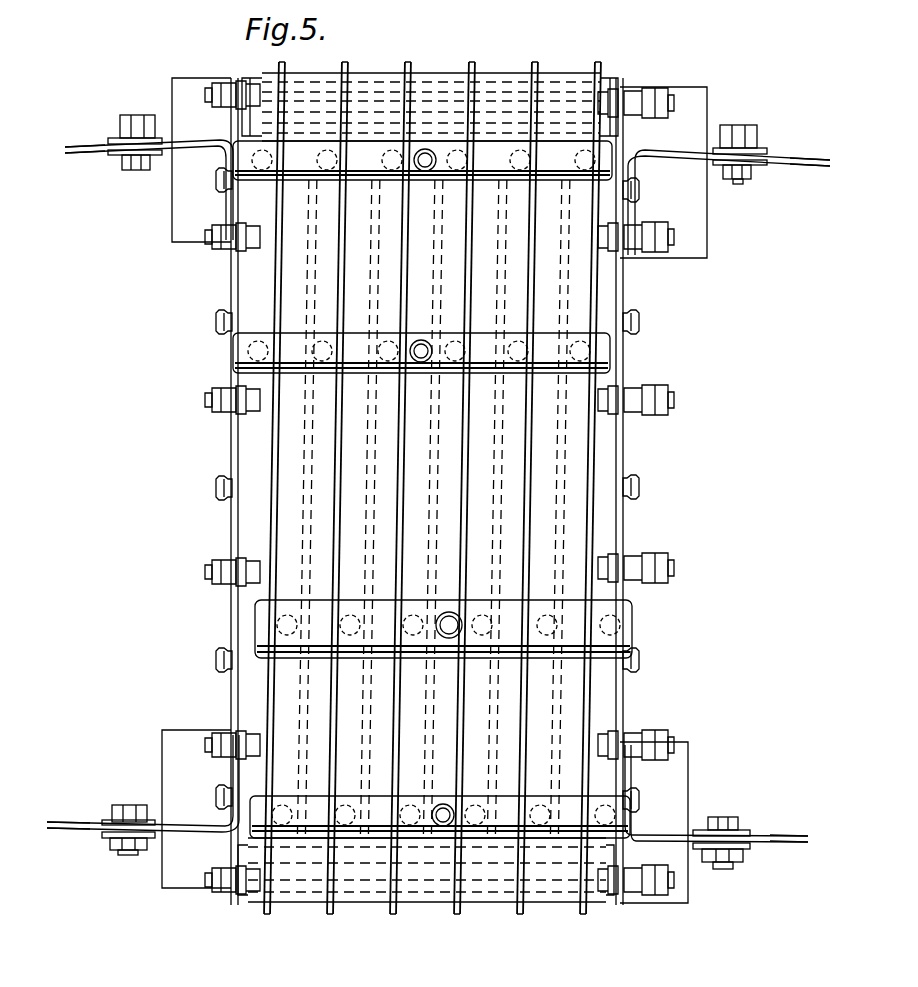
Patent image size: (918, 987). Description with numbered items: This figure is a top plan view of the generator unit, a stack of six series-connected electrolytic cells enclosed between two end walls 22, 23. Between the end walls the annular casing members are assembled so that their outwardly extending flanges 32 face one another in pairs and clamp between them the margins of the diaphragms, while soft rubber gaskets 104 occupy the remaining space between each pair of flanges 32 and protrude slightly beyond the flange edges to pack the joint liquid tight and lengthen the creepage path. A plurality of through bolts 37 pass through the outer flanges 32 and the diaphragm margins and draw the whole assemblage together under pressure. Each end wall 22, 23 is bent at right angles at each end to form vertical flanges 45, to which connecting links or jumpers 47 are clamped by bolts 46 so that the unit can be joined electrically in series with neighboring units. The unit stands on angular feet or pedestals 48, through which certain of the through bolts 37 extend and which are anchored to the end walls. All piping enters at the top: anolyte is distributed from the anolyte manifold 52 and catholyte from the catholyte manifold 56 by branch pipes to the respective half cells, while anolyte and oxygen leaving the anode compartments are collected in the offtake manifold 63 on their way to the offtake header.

The end wall 22 is at (232, 282).
The end wall 23 is at (627, 300).
The outwardly extending flange 32 is at (518, 470).
The through bolt 37 is at (638, 92).
The vertical flange 45 is at (188, 139).
The bolt 46 is at (127, 164).
The connecting link or jumper 47 is at (78, 142).
The angular foot or pedestal 48 is at (693, 93).
The anolyte manifold 52 is at (607, 164).
The catholyte manifold 56 is at (628, 812).
The offtake manifold 63 is at (605, 357).
The gasket 104 is at (597, 72).